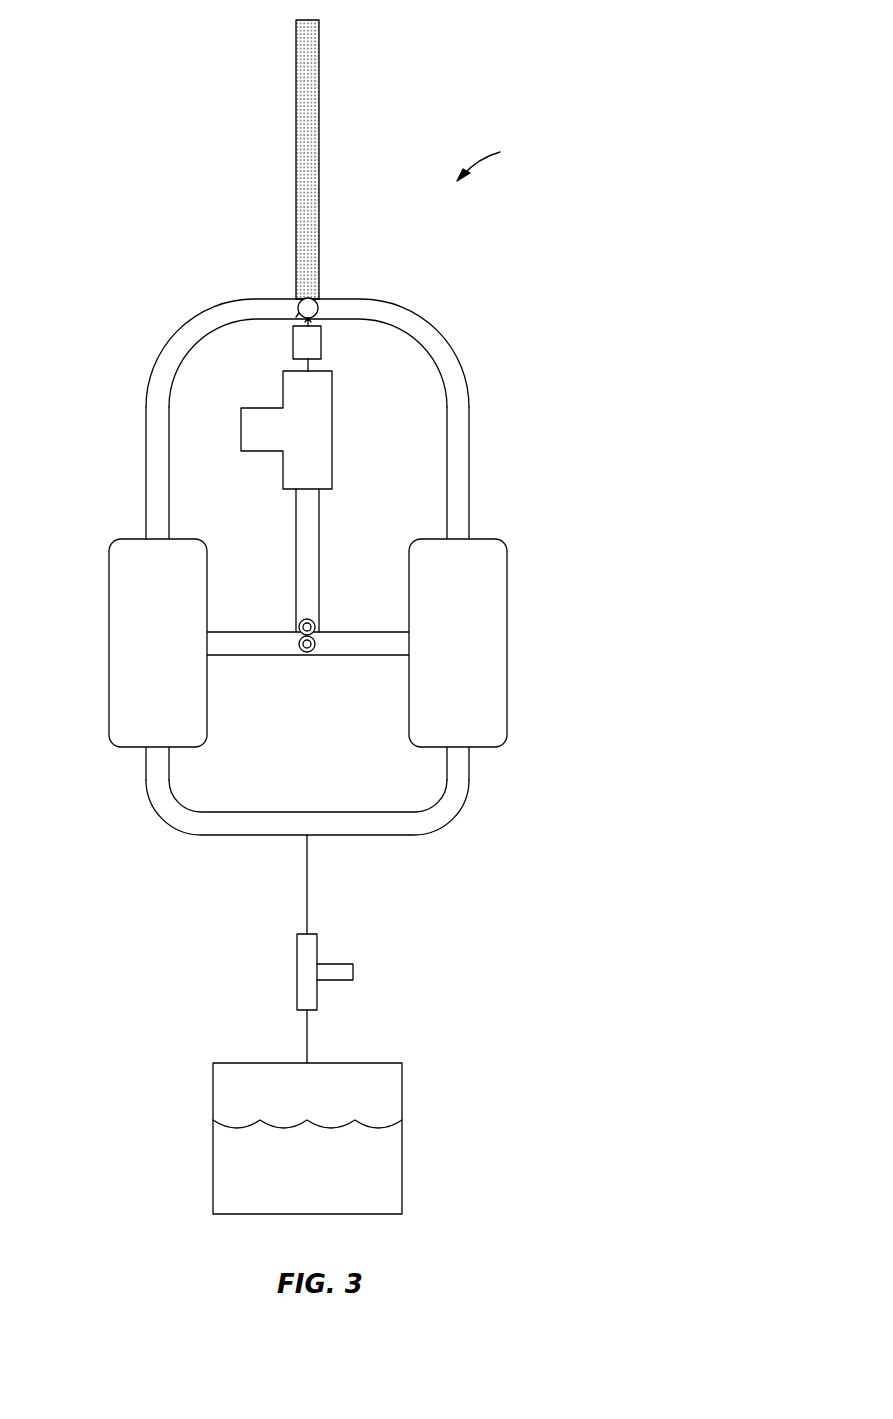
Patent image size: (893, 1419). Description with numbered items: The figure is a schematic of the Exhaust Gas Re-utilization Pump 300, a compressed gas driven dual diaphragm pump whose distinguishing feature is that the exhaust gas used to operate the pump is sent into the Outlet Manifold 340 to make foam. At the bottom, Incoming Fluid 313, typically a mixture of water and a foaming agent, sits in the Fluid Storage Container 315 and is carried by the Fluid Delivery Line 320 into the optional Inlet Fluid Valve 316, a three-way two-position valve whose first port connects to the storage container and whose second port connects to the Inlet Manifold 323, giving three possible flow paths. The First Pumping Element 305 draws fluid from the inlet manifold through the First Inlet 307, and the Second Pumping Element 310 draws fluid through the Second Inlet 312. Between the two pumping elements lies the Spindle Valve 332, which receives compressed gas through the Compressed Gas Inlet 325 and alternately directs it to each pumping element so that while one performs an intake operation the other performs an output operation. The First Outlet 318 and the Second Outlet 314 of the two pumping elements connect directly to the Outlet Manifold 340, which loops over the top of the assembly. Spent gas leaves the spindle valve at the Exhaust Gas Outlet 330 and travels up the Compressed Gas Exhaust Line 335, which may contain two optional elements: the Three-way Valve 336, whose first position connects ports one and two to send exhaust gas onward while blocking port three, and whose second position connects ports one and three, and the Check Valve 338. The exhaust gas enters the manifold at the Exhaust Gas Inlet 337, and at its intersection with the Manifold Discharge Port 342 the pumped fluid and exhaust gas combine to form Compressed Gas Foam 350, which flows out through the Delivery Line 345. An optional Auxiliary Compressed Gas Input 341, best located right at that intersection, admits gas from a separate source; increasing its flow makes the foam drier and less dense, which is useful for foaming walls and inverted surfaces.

The Exhaust Gas Re-utilization Pump 300 is at (507, 161).
The First Pumping Element 305 is at (120, 640).
The First Inlet 307 is at (147, 752).
The Second Pumping Element 310 is at (495, 640).
The Second Inlet 312 is at (470, 752).
The Incoming Fluid 313 is at (224, 1165).
The Second Outlet 314 is at (470, 538).
The Fluid Storage Container 315 is at (404, 1092).
The Inlet Fluid Valve 316 is at (297, 975).
The First Outlet 318 is at (147, 538).
The Fluid Delivery Line 320 is at (309, 888).
The Inlet Manifold 323 is at (165, 824).
The Compressed Gas Inlet 325 is at (315, 652).
The Exhaust Gas Outlet 330 is at (300, 620).
The Spindle Valve 332 is at (225, 645).
The Compressed Gas Exhaust Line 335 is at (320, 572).
The Three-way Valve 336 is at (325, 427).
The Exhaust Gas Inlet 337 is at (314, 320).
The Check Valve 338 is at (322, 343).
The Outlet Manifold 340 is at (455, 358).
The Auxiliary Compressed Gas Input 341 is at (295, 311).
The Manifold Discharge Port 342 is at (298, 302).
The Delivery Line 345 is at (296, 138).
The Compressed Gas Foam 350 is at (312, 40).